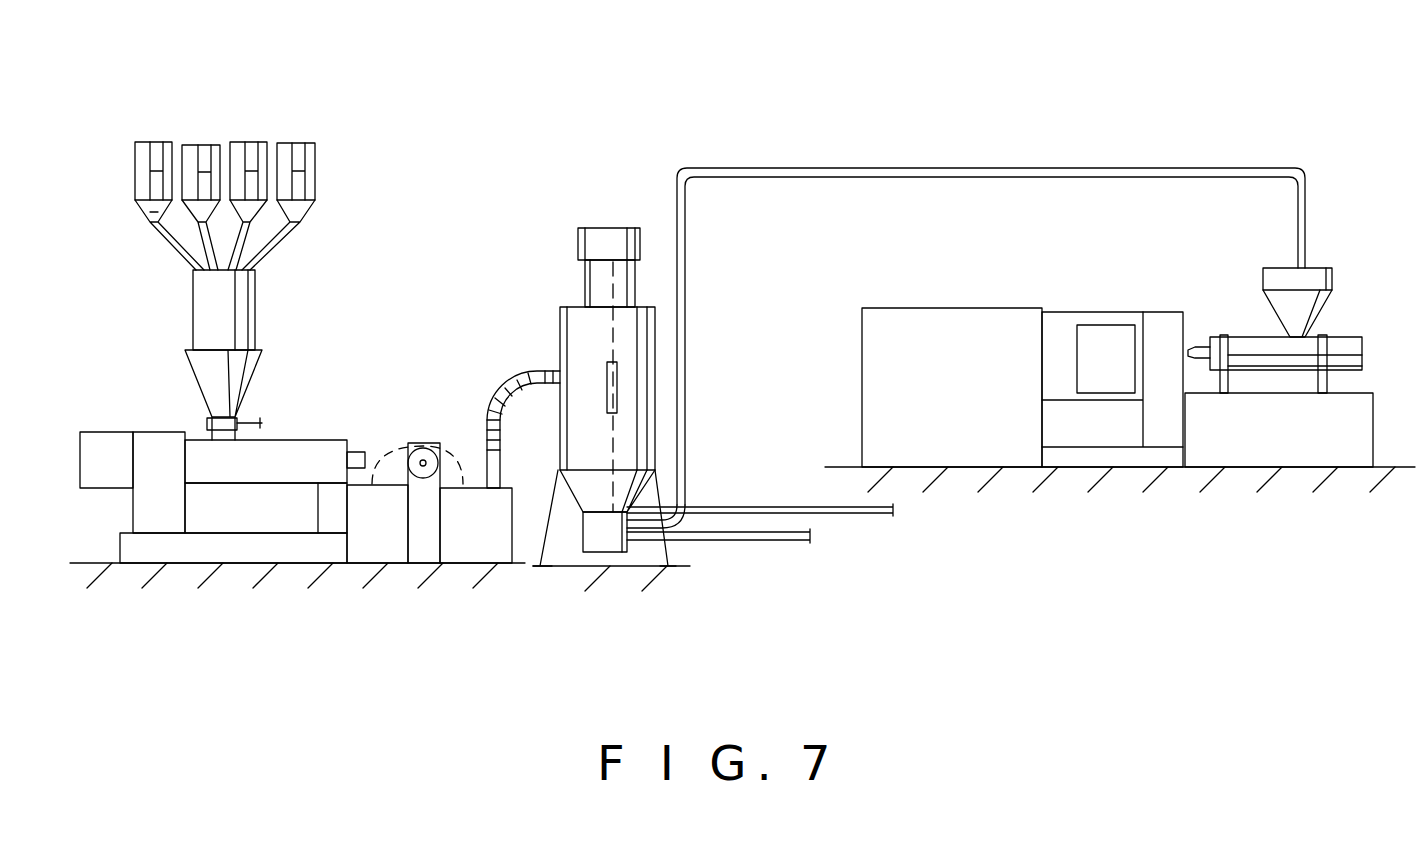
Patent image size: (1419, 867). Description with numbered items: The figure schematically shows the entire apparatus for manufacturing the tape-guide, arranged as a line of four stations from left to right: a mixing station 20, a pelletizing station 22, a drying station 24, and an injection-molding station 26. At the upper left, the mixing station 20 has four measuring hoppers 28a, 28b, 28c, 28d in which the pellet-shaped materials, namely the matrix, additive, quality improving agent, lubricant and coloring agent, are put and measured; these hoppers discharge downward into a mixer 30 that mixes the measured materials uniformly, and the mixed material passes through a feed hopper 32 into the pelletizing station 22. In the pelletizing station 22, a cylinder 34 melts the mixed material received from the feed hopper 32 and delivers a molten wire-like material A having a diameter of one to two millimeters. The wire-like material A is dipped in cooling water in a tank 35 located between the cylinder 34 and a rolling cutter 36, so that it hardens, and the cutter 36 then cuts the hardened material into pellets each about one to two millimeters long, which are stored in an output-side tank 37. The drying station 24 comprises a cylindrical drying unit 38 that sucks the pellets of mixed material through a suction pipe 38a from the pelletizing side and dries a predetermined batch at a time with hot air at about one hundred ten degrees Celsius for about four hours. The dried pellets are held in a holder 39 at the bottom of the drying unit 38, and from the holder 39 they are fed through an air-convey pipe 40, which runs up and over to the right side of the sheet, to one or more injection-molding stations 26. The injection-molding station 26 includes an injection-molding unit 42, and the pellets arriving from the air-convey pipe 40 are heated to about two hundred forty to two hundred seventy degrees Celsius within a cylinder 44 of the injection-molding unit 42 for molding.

The mixing station 20 is at (298, 323).
The pelletizing station 22 is at (312, 612).
The drying station 24 is at (625, 593).
The injection-molding station 26 is at (1188, 510).
The measuring hopper 28a is at (156, 142).
The measuring hopper 28b is at (203, 145).
The measuring hopper 28c is at (247, 142).
The measuring hopper 28d is at (312, 143).
The mixer 30 is at (193, 305).
The feed hopper 32 is at (255, 375).
The cylinder 34 is at (325, 440).
The tank 35 is at (380, 555).
The rolling cutter 36 is at (432, 425).
The output-side tank 37 is at (465, 555).
The cylindrical drying unit 38 is at (560, 312).
The suction pipe 38a is at (522, 377).
The holder 39 is at (587, 537).
The air-convey pipe 40 is at (684, 410).
The injection-molding unit 42 is at (1177, 293).
The cylinder 44 is at (1350, 340).
The molten wire-like material A is at (375, 470).